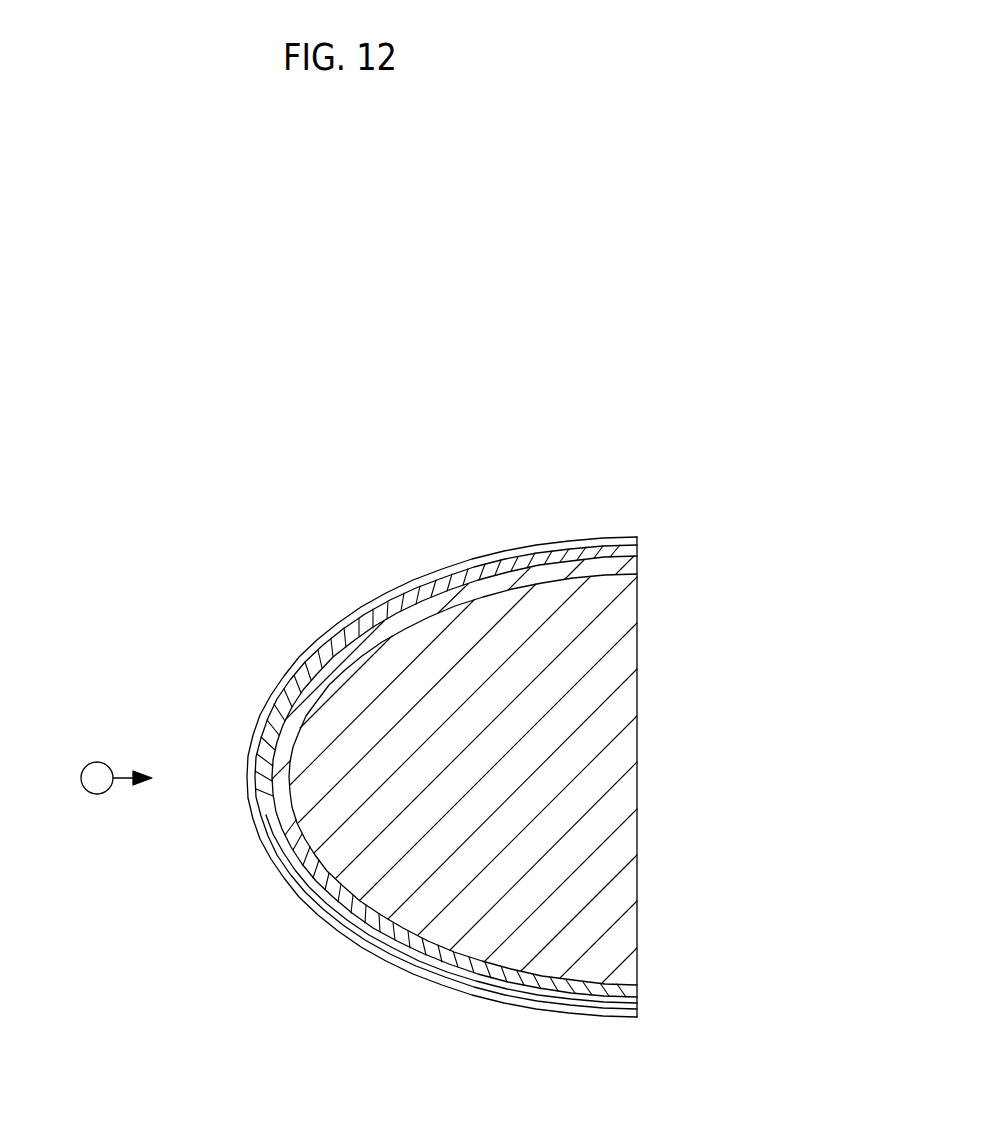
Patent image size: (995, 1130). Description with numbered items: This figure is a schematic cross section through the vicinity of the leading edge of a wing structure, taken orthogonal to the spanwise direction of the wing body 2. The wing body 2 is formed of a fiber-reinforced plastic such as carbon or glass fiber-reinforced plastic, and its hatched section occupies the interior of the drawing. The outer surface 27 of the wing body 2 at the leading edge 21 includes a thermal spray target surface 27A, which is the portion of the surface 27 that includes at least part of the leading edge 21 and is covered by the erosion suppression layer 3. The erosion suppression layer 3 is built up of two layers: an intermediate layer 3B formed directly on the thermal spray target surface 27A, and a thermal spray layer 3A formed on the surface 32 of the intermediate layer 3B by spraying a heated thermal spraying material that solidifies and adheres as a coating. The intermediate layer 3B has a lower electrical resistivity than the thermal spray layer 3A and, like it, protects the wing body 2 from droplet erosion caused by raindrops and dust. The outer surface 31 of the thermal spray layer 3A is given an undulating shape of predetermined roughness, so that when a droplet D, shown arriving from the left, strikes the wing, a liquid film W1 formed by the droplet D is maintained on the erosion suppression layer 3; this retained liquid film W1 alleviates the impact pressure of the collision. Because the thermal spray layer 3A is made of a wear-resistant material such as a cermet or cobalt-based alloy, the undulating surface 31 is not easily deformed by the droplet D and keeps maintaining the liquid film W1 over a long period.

The wing body 2 is at (507, 600).
The leading edge 21 is at (563, 583).
The erosion suppression layer 3 is at (446, 729).
The thermal spray layer 3A is at (400, 597).
The intermediate layer 3B is at (460, 597).
The liquid film W1 is at (338, 625).
The surface 27 is at (438, 907).
The thermal spray target surface 27A is at (341, 933).
The surface of the thermal spray layer 31 is at (263, 837).
The surface of the intermediate layer 32 is at (300, 893).
The droplet D is at (95, 762).